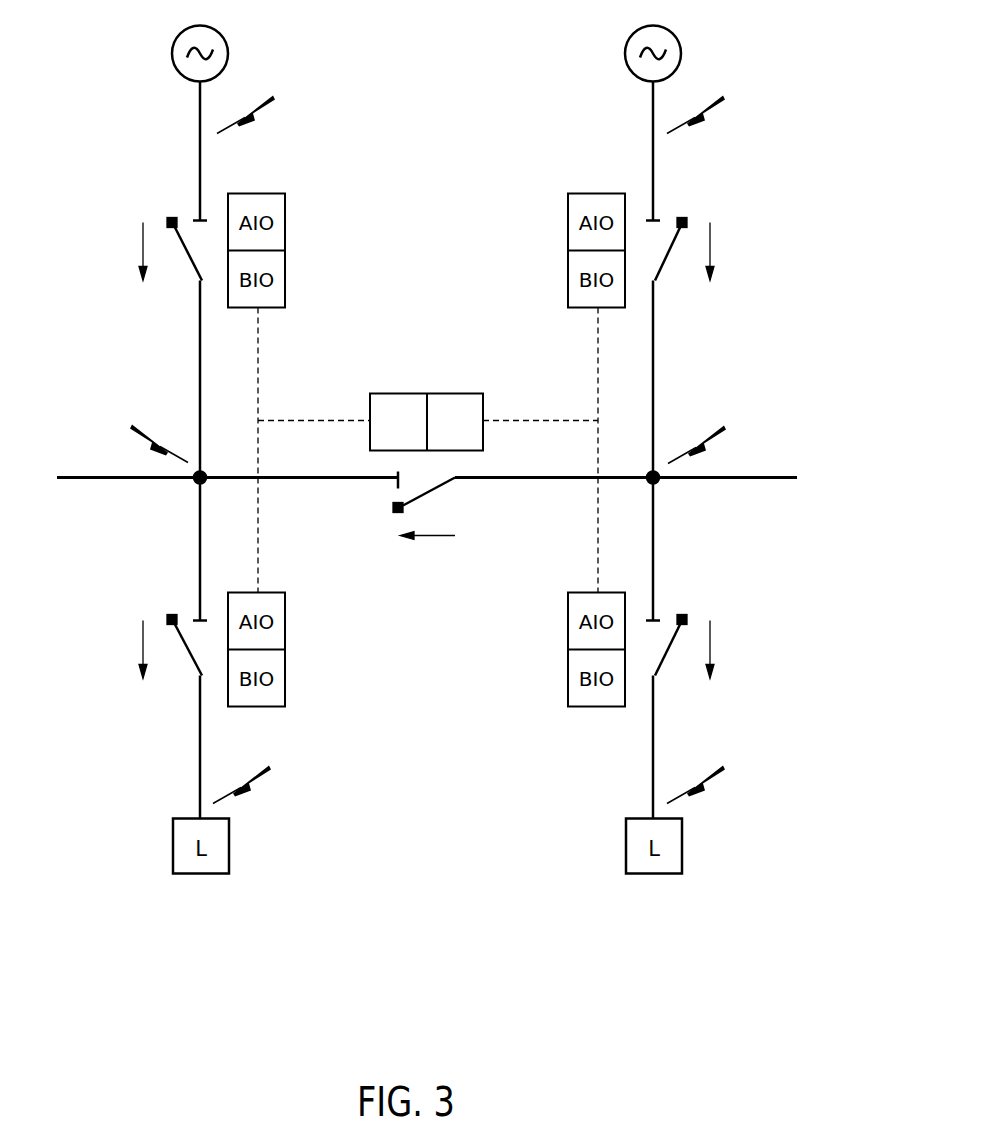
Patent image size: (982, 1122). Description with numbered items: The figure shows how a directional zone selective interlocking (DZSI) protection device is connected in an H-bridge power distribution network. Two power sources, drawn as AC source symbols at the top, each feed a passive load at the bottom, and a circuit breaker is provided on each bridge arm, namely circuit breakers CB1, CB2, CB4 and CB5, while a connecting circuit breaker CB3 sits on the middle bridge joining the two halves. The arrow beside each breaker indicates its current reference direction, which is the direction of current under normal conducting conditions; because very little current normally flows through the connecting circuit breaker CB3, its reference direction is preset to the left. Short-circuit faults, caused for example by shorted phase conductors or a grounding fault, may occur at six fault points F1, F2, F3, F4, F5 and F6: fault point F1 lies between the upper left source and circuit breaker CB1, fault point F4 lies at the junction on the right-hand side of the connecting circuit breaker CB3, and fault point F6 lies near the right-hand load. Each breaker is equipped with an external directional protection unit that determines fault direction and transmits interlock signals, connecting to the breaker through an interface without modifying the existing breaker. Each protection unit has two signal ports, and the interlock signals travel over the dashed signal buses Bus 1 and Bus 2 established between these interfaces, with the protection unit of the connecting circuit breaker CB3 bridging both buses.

The circuit breaker CB1 is at (170, 232).
The circuit breaker CB2 is at (685, 232).
The connecting circuit breaker CB3 is at (396, 509).
The circuit breaker CB4 is at (170, 629).
The circuit breaker CB5 is at (685, 630).
The fault point F1 is at (270, 115).
The fault point F2 is at (721, 115).
The fault point F3 is at (130, 444).
The fault point F4 is at (729, 445).
The fault point F5 is at (269, 785).
The fault point F6 is at (721, 785).
The signal bus Bus 1 is at (314, 450).
The signal bus Bus 2 is at (540, 450).